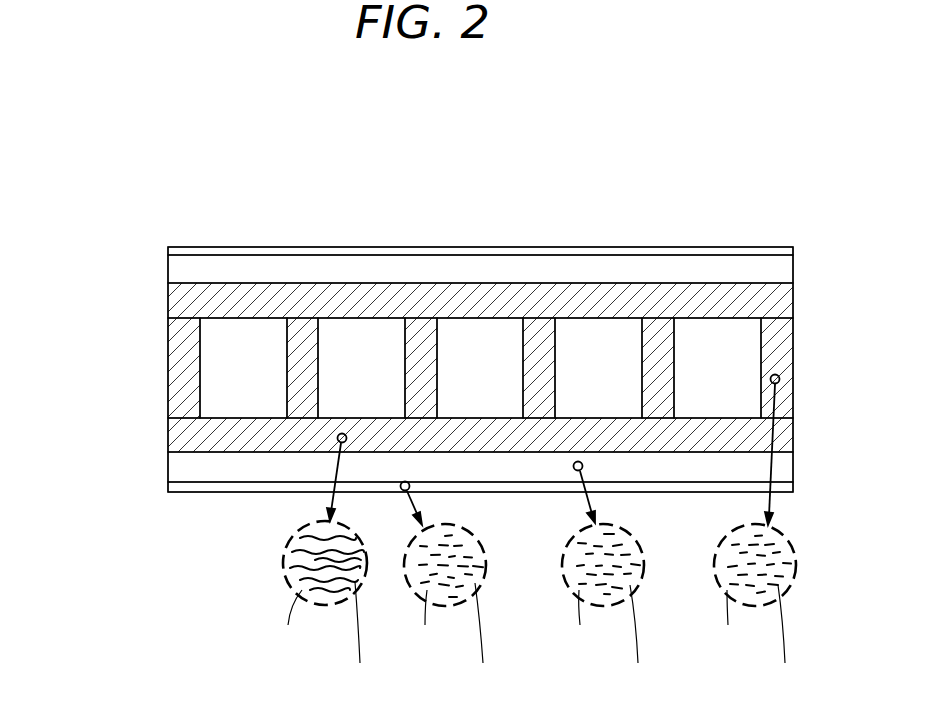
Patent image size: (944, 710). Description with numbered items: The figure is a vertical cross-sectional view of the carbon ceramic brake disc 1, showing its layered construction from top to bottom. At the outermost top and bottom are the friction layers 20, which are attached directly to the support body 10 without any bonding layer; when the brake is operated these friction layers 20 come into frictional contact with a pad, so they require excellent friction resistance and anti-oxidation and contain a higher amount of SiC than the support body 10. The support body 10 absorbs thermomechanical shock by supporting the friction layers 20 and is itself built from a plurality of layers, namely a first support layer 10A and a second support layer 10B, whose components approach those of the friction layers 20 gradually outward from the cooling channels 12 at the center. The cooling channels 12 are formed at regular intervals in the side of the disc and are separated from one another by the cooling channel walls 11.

The carbon ceramic brake disc 1 is at (755, 166).
The support body 10 is at (82, 488).
The first support layer 10A is at (178, 268).
The second support layer 10B is at (178, 300).
The cooling channel wall 11 is at (178, 376).
The cooling channel 12 is at (236, 345).
The friction layer 20 is at (204, 251).